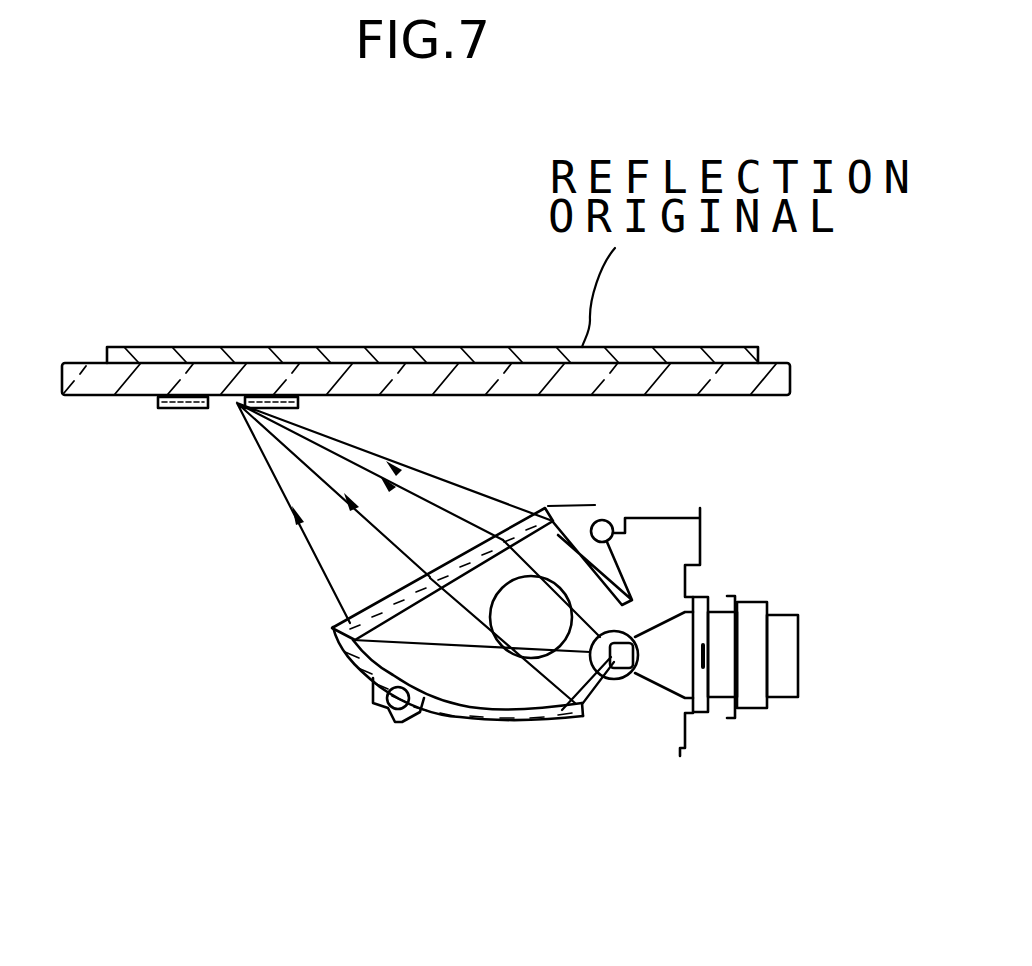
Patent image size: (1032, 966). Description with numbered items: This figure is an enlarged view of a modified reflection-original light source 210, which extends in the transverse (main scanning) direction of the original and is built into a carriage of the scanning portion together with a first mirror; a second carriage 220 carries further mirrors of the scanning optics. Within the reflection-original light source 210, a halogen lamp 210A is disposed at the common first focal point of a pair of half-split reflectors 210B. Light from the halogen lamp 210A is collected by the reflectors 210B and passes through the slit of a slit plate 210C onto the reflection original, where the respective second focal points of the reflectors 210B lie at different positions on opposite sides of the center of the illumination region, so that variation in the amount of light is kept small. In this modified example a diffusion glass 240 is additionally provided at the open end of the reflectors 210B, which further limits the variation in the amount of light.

The second carriage 220 is at (360, 346).
The slit plate 210C is at (178, 410).
The diffusion glass 240 is at (543, 512).
The reflector 210B is at (528, 723).
The halogen lamp 210A is at (595, 645).
The reflection-original light source 210 is at (635, 752).